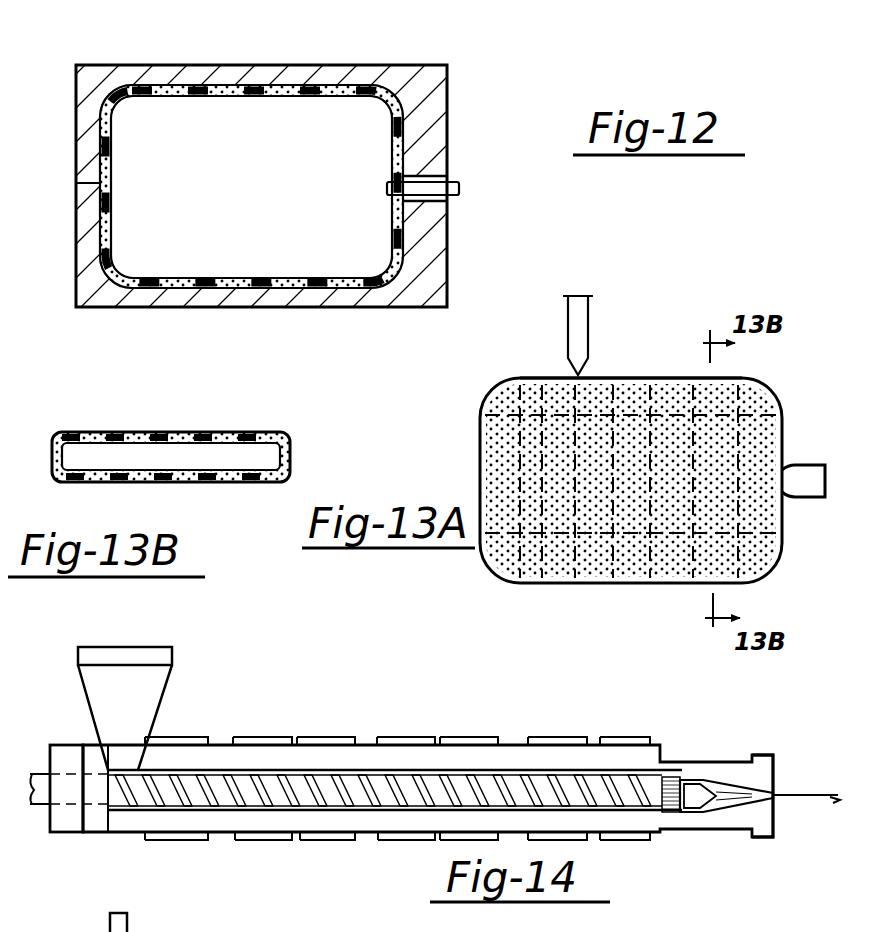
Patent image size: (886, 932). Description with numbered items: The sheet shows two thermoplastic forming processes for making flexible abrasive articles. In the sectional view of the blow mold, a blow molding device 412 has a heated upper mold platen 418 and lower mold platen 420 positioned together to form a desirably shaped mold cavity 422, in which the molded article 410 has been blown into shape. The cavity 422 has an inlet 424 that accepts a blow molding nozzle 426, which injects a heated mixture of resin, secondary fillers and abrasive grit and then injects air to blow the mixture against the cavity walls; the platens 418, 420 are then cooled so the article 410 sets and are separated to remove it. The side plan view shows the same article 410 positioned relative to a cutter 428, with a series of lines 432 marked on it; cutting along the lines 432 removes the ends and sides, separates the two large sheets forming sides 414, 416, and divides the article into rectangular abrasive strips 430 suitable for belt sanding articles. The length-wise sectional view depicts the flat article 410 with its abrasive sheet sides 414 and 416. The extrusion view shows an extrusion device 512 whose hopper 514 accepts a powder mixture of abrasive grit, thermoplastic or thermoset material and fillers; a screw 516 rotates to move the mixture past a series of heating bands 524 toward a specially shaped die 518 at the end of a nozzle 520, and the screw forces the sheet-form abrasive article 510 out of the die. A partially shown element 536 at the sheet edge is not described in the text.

In FIG. 12, the blow molding device 412 is at (208, 62).
In FIG. 12, the upper mold platen 418 is at (378, 72).
In FIG. 12, the molded article 410 is at (208, 100).
In FIG. 13A, the molded article 410 is at (492, 383).
In FIG. 13B, the molded article 410 is at (177, 425).
In FIG. 12, the lower mold platen 420 is at (122, 296).
In FIG. 12, the mold cavity 422 is at (113, 262).
In FIG. 12, the inlet 424 is at (446, 183).
In FIG. 12, the blow molding nozzle 426 is at (460, 188).
In FIG. 13A, the cutter 428 is at (583, 332).
In FIG. 13A, the abrasive strips 430 is at (630, 385).
In FIG. 13A, the lines 432 is at (740, 405).
In FIG. 13A, the side 414 is at (563, 562).
In FIG. 13B, the side 414 is at (140, 432).
In FIG. 13B, the side 416 is at (190, 482).
In FIG. 14, the extrusion device 512 is at (256, 724).
In FIG. 14, the hopper 514 is at (160, 702).
In FIG. 14, the screw 516 is at (374, 790).
In FIG. 14, the heating bands 524 is at (478, 737).
In FIG. 14, the nozzle 520 is at (735, 792).
In FIG. 14, the die 518 is at (765, 812).
In FIG. 14, the abrasive article 510 is at (805, 792).
In FIG. 14, the component (partially shown) 536 is at (152, 930).